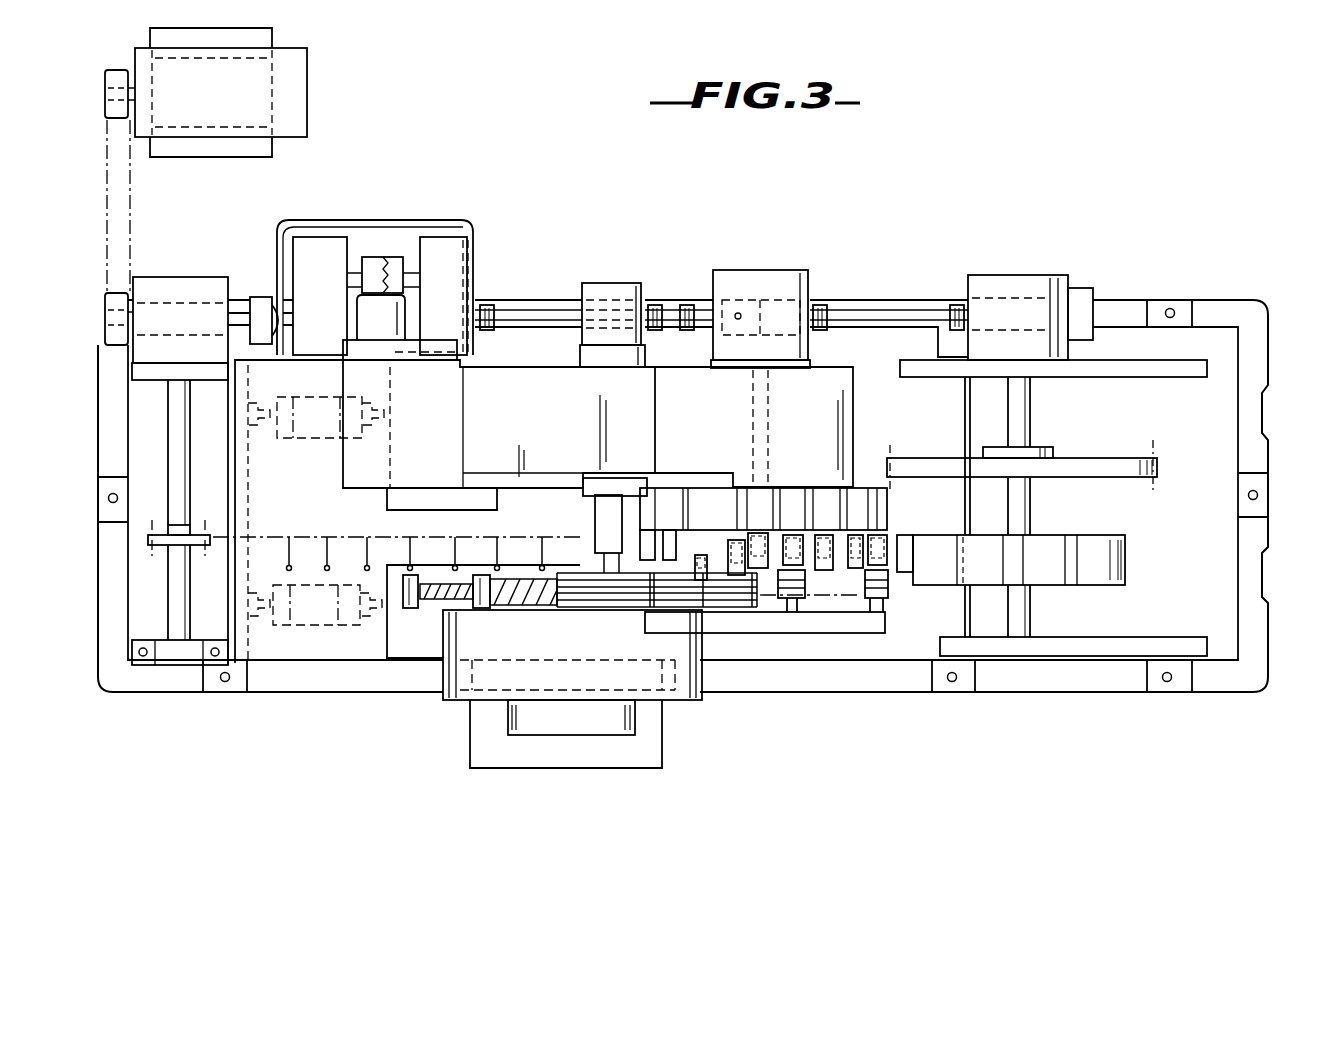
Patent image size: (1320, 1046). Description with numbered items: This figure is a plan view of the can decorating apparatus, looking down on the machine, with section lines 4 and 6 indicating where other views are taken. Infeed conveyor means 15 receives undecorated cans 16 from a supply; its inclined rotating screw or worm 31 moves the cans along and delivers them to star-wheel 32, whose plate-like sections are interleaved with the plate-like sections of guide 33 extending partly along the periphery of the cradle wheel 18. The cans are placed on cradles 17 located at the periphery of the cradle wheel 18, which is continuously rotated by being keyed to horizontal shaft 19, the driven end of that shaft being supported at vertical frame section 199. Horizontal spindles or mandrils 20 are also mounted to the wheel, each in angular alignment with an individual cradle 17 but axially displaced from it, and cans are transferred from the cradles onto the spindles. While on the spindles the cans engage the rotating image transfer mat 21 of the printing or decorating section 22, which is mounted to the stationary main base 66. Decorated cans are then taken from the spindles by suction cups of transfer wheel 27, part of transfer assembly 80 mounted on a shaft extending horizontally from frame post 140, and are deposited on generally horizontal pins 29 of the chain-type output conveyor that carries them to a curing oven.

The vertical frame section 199 is at (560, 433).
The horizontal shaft 19 is at (773, 440).
The cradle wheel 18 is at (893, 493).
The printing or decorating section 22 is at (1190, 441).
The image transfer mat 21 is at (1127, 573).
The horizontal pins 29 is at (370, 550).
The undecorated cans 16 is at (418, 580).
The infeed conveyor means 15 is at (528, 565).
The horizontal spindles or mandrils 20 is at (645, 532).
The transfer wheel 27 is at (440, 628).
The inclined rotating screw or worm 31 is at (530, 605).
The star-wheel 32 is at (600, 615).
The guide 33 is at (740, 608).
The cradles 17 is at (795, 602).
The main base 66 is at (815, 685).
The transfer assembly 80 is at (495, 700).
The frame post 140 is at (555, 727).
The section line 4- 4 is at (640, 642).
The section line 6- 6 is at (447, 728).